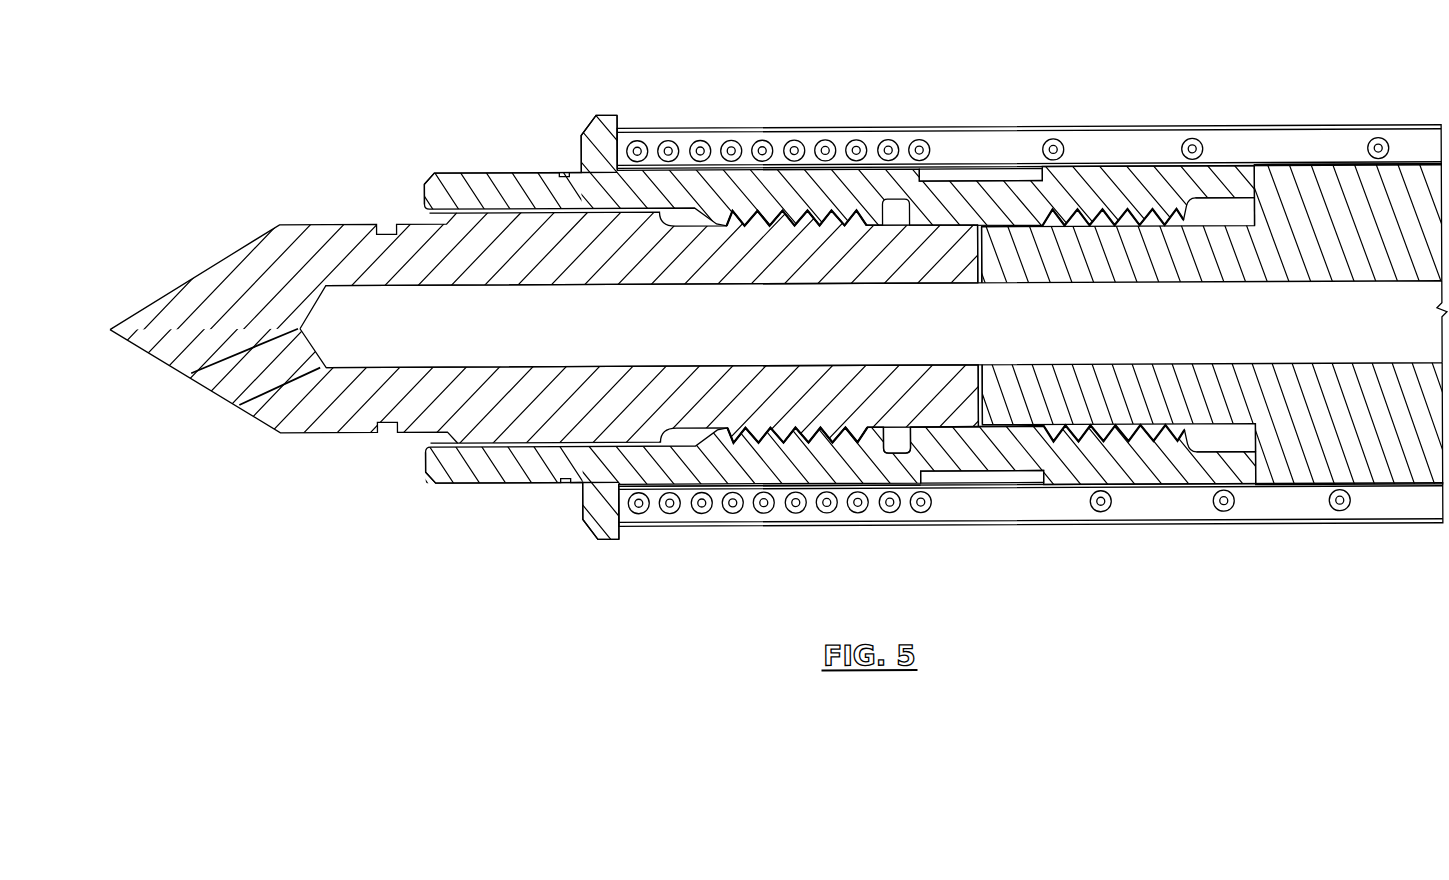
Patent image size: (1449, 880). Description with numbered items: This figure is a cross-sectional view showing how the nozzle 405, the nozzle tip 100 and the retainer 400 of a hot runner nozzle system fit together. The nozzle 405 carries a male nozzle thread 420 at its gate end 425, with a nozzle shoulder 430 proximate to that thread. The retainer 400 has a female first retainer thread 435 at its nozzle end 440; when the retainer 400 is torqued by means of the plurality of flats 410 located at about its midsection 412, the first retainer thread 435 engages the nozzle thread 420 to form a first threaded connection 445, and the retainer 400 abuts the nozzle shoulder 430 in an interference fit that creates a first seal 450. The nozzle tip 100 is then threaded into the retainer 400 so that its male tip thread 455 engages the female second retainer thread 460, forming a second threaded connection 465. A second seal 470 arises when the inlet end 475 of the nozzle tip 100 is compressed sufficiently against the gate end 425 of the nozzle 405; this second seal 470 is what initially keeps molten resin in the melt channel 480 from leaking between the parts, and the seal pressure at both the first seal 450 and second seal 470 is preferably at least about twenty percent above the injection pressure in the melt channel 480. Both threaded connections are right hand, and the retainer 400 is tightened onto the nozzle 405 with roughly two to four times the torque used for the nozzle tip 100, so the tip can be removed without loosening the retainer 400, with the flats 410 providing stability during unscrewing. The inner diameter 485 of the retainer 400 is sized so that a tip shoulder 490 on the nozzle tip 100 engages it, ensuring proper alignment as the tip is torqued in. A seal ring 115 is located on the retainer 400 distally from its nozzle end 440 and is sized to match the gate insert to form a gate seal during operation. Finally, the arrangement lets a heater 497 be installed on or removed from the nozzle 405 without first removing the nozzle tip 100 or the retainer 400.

The nozzle tip 100 is at (207, 277).
The seal ring 115 is at (445, 170).
The retainer 400 is at (1110, 184).
The nozzle 405 is at (1360, 168).
The plurality of flats 410 is at (970, 169).
The midsection 412 is at (957, 446).
The nozzle thread 420 is at (1115, 434).
The gate end 425 is at (1112, 260).
The nozzle shoulder 430 is at (1258, 212).
The first retainer thread 435 is at (1108, 434).
The nozzle end 440 is at (1262, 470).
The first threaded connection 445 is at (1152, 462).
The first seal 450 is at (1250, 200).
The tip thread 455 is at (835, 433).
The second retainer thread 460 is at (813, 471).
The second threaded connection 465 is at (818, 521).
The second seal 470 is at (982, 286).
The inlet end 475 is at (958, 251).
The melt channel 480 is at (759, 346).
The inner diameter 485 is at (437, 211).
The tip shoulder 490 is at (623, 222).
The heater 497 is at (806, 128).